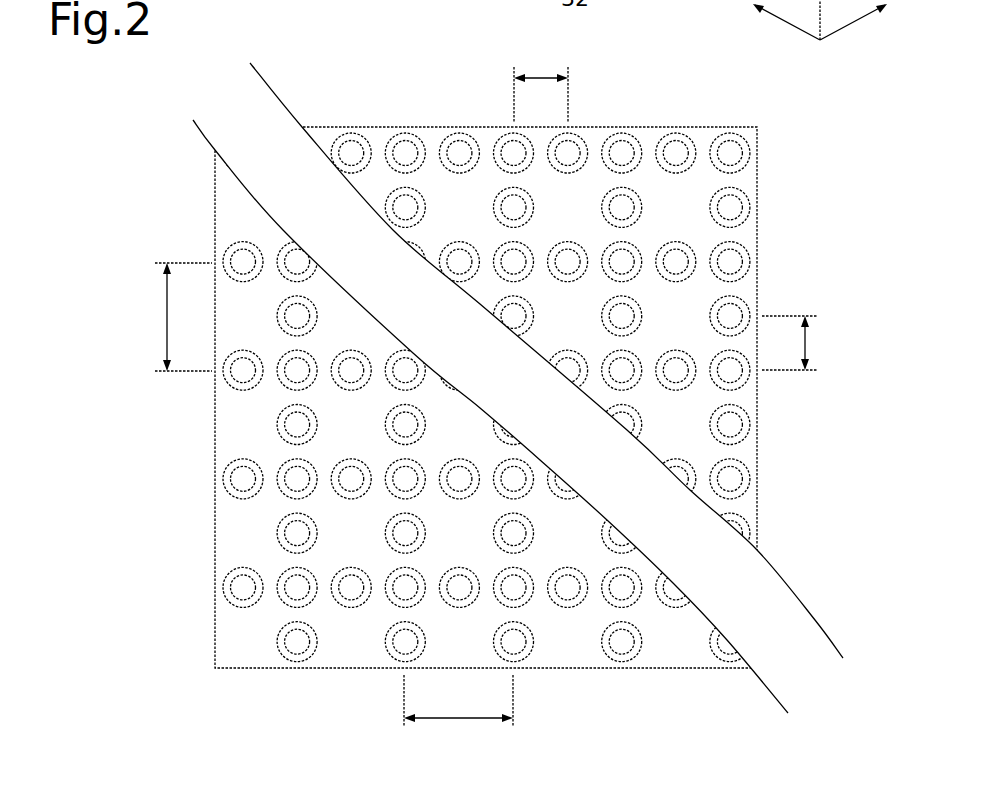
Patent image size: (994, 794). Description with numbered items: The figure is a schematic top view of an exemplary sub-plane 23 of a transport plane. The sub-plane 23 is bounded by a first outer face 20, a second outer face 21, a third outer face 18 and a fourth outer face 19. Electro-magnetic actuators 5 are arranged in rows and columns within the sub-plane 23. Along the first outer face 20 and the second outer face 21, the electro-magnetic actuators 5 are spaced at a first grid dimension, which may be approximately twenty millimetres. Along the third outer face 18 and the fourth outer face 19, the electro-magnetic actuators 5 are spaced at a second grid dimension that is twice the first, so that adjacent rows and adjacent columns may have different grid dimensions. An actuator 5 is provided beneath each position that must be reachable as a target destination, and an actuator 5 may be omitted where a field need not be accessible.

The electro-magnetic actuators 5 is at (514, 317).
The third outer face 18 is at (170, 317).
The fourth outer face 19 is at (458, 715).
The first outer face 20 is at (802, 343).
The second outer face 21 is at (541, 83).
The sub-plane 23 is at (330, 60).